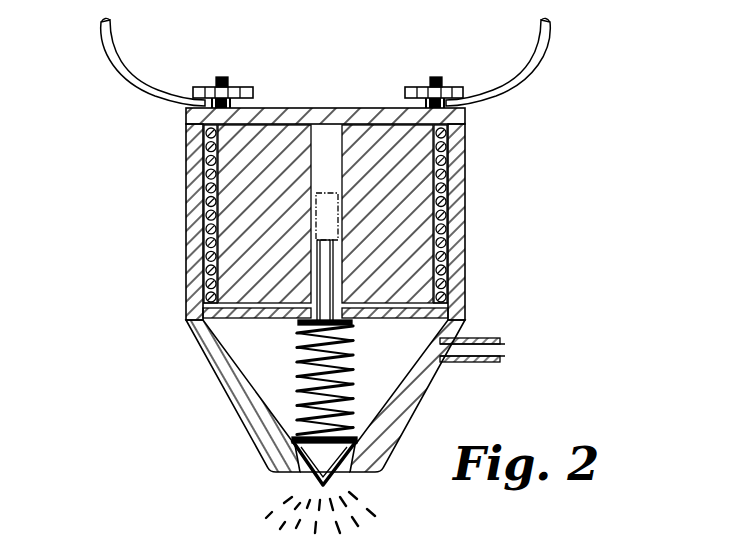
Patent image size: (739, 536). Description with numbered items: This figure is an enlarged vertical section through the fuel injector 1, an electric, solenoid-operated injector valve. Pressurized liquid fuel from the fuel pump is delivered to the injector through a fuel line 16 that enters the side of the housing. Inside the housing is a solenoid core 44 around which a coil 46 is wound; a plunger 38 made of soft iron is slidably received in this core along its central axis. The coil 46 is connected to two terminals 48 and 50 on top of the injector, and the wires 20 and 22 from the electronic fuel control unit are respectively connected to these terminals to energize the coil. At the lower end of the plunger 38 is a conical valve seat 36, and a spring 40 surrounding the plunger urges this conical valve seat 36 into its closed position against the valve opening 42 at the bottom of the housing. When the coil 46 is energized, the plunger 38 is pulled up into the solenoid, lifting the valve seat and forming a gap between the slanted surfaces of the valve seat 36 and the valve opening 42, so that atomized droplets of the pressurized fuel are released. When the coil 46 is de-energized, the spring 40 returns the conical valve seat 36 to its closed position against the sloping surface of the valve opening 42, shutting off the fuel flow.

The fuel injector 1 is at (498, 214).
The fuel line 16 is at (488, 337).
The line 20 is at (536, 58).
The line 22 is at (101, 44).
The conical valve seat 36 is at (352, 471).
The plunger 38 is at (328, 289).
The spring 40 is at (352, 329).
The valve opening 42 is at (308, 478).
The solenoid core 44 is at (410, 263).
The coil 46 is at (447, 173).
The terminal 48 is at (434, 80).
The terminal 50 is at (221, 78).